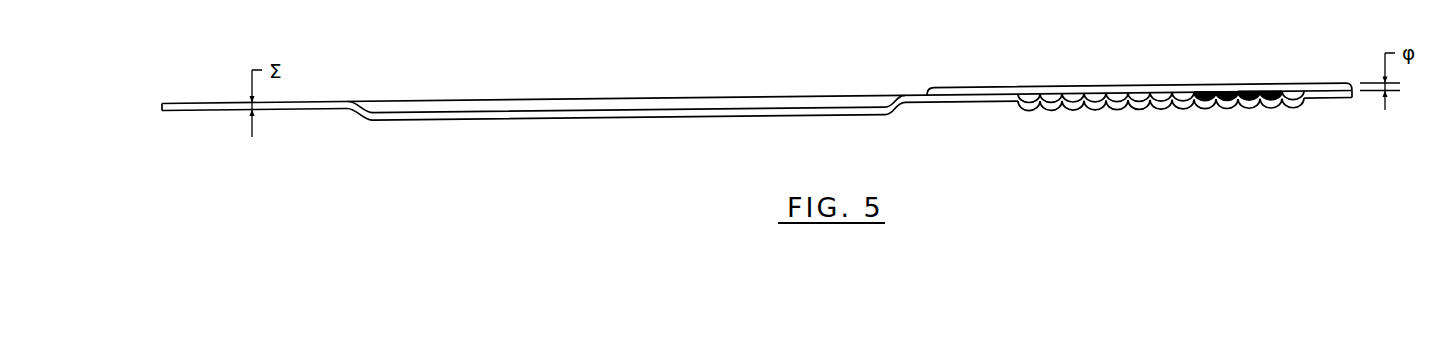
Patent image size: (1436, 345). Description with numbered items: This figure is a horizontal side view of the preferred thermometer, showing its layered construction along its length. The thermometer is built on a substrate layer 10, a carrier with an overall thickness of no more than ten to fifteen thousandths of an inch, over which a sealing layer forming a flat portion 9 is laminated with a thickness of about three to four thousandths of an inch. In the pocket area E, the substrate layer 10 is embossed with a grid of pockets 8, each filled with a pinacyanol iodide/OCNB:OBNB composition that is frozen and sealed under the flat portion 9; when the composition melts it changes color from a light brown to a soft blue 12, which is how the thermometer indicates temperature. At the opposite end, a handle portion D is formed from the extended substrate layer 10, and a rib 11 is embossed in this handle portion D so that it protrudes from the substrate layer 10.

The pockets 8 is at (1032, 96).
The flat portion 9 is at (947, 88).
The substrate layer 10 is at (755, 96).
The rib 11 is at (467, 120).
The soft blue 12 is at (1203, 92).
The handle portion D is at (558, 138).
The pocket area E is at (1216, 124).